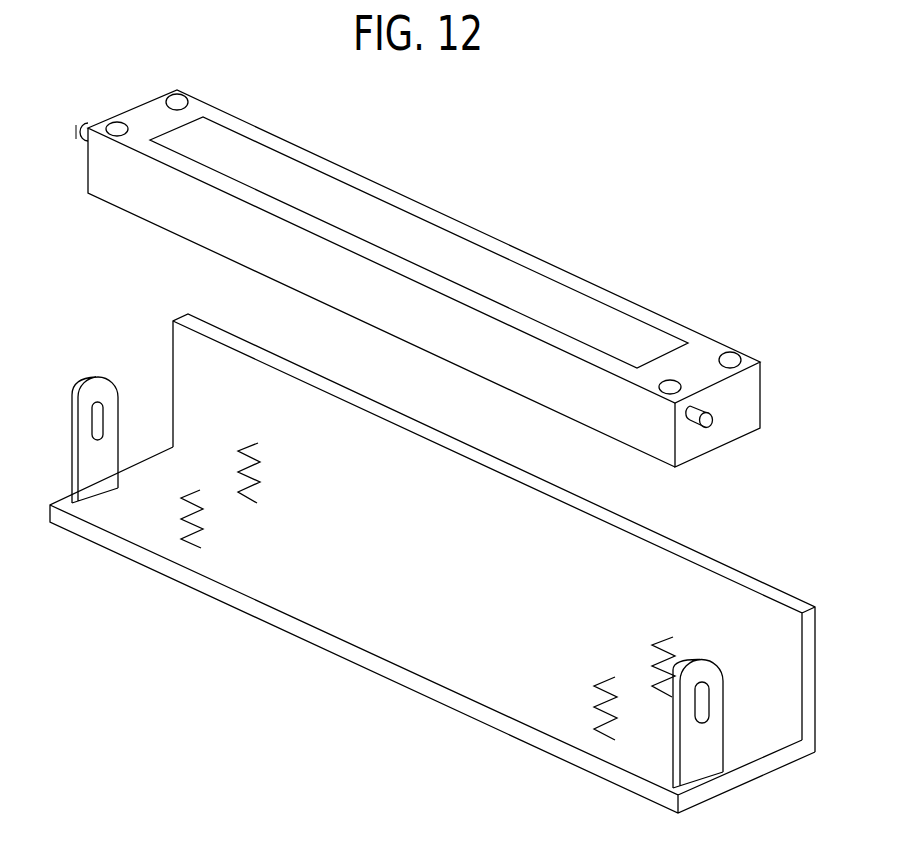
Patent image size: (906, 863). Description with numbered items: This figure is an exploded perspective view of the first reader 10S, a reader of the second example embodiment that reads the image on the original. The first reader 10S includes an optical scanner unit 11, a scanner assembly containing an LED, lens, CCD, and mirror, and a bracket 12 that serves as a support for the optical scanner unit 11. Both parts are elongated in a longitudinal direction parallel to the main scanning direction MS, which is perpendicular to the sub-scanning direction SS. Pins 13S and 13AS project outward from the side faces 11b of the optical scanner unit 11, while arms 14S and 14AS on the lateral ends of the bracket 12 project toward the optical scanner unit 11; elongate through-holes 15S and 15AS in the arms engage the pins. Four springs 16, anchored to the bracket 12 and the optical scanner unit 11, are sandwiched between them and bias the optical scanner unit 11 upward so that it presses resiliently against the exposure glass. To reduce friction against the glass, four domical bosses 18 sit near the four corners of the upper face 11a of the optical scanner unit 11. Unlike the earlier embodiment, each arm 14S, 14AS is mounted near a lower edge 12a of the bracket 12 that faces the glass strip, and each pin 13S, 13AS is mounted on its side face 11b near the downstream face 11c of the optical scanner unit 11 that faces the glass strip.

The first reader 10S is at (597, 201).
The optical scanner unit 11 is at (468, 226).
The upper face 11a is at (197, 110).
The side face 11b is at (110, 163).
The downstream face 11c is at (377, 318).
The bracket 12 is at (495, 485).
The lower edge 12a is at (460, 706).
The pin 13AS is at (82, 122).
The pin 13S is at (708, 424).
The arm 14AS is at (82, 459).
The arm 14S is at (697, 751).
The elongate through-hole 15AS is at (96, 406).
The elongate through-hole 15S is at (707, 693).
The spring 16 is at (258, 503).
The domical boss 18 is at (172, 96).
The main scanning direction MS is at (270, 653).
The sub-scanning direction SS is at (800, 778).